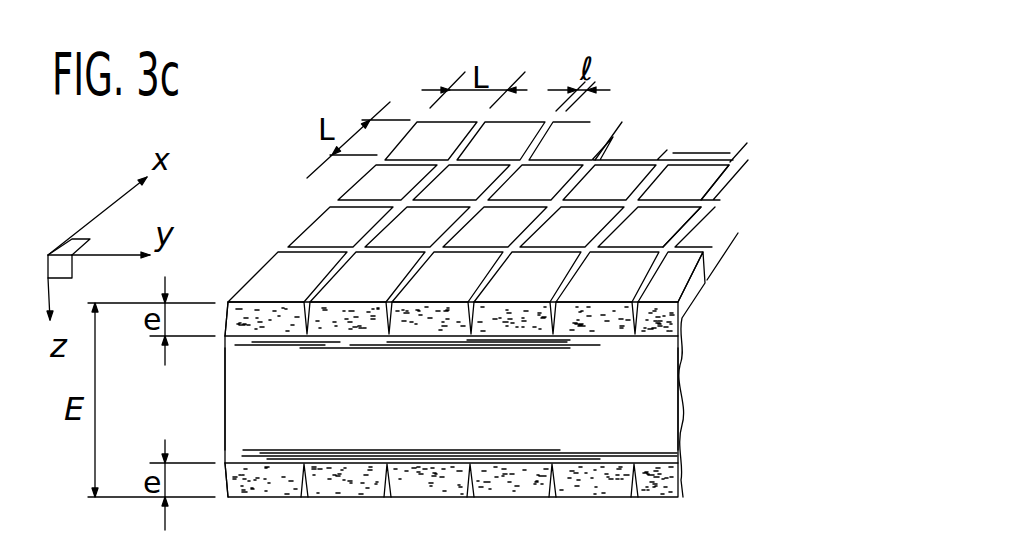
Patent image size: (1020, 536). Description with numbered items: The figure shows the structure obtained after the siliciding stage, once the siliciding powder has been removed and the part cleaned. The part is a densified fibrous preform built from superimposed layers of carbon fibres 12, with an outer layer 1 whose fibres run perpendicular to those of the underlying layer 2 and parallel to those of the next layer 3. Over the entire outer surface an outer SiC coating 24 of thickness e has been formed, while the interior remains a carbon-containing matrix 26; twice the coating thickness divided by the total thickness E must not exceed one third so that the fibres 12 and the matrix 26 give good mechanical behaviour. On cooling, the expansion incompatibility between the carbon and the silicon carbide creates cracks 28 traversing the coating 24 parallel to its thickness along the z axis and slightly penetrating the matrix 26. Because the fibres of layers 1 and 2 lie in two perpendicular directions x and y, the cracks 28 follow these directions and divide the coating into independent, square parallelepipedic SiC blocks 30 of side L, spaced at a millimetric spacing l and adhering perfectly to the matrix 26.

The outer layer 1 is at (272, 308).
The underlying layer 2 is at (268, 337).
The layer underlying layer 2 3 is at (295, 346).
The carbon fibres 12 is at (453, 327).
The outer SiC coating 24 is at (688, 316).
The carbon-containing matrix 26 is at (680, 463).
The cracks 28 is at (643, 190).
The parallelepipedic SiC blocks 30 is at (672, 223).